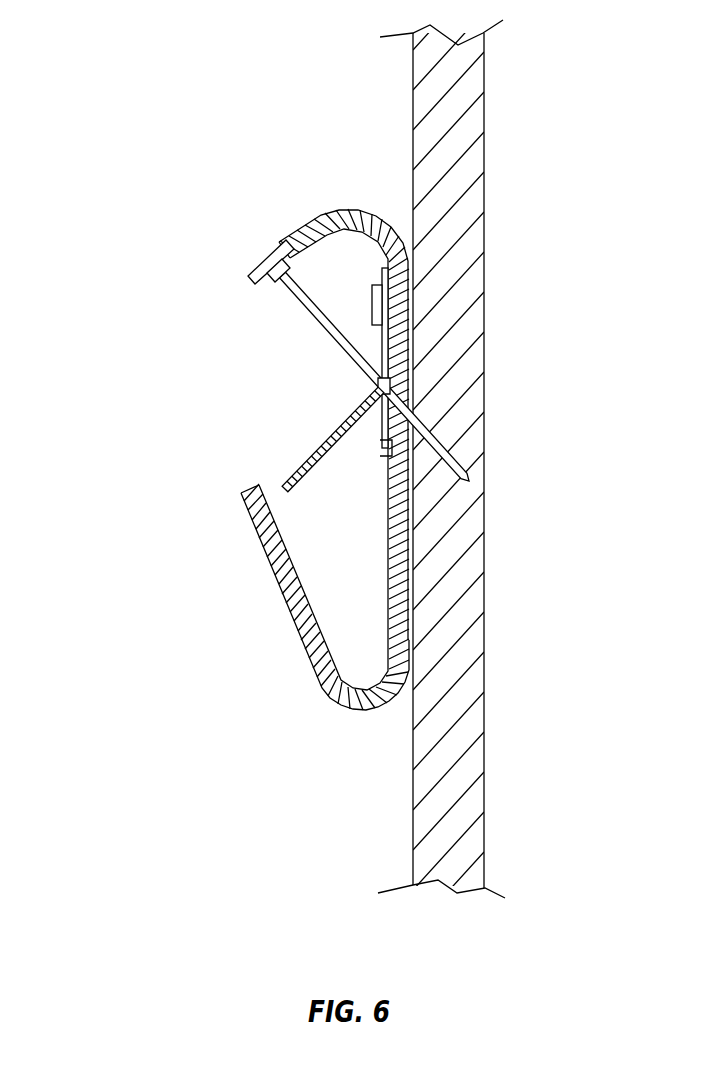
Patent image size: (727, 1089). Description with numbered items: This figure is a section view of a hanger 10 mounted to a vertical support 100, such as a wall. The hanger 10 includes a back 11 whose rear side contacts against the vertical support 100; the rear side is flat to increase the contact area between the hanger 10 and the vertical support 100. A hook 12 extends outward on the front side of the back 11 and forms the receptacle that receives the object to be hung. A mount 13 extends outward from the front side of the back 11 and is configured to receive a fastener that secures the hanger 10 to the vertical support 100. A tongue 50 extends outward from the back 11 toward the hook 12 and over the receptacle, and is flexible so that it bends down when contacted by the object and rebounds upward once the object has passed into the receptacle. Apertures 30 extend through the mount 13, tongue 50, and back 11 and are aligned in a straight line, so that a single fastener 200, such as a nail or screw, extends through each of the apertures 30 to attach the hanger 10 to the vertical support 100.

The vertical support 100 is at (438, 92).
The hanger 10 is at (310, 479).
The mount 13 is at (300, 213).
The back 11 is at (385, 512).
The hook 12 is at (362, 727).
The fastener 200 is at (335, 341).
The apertures 30 is at (252, 303).
The tongue 50 is at (310, 448).